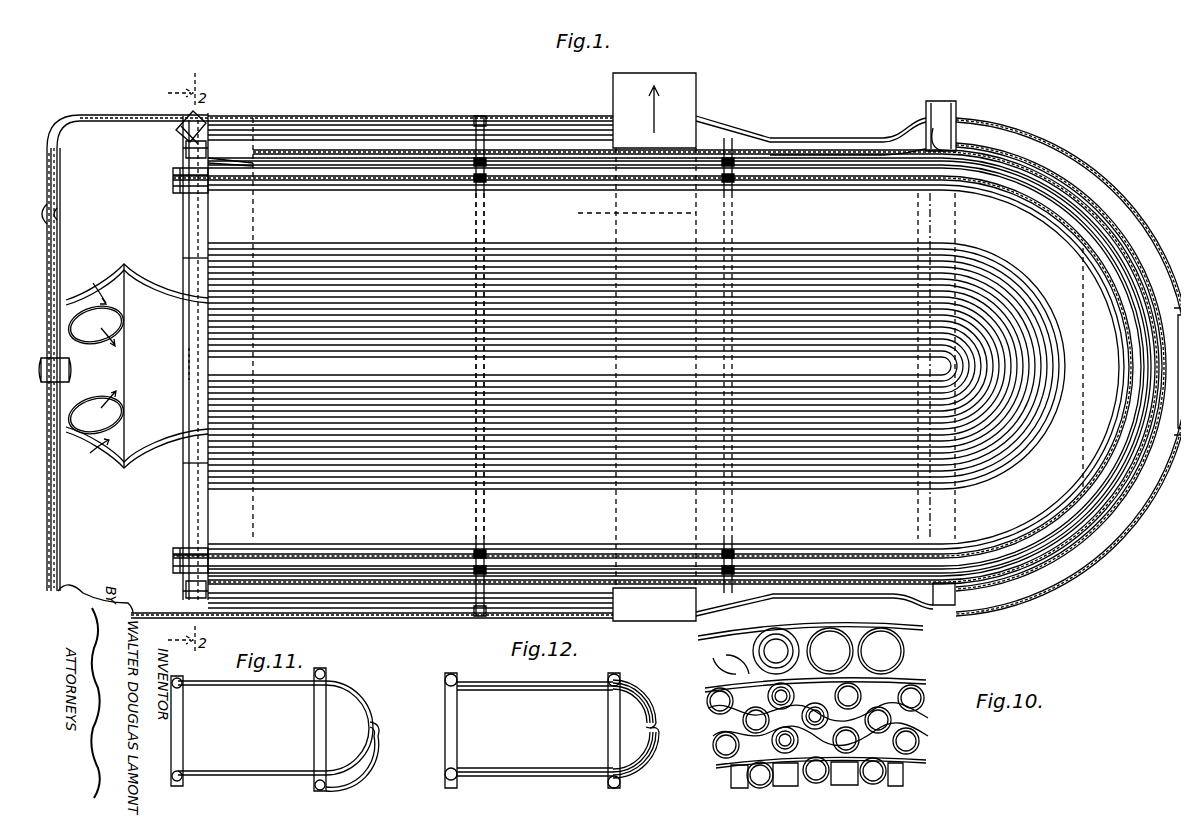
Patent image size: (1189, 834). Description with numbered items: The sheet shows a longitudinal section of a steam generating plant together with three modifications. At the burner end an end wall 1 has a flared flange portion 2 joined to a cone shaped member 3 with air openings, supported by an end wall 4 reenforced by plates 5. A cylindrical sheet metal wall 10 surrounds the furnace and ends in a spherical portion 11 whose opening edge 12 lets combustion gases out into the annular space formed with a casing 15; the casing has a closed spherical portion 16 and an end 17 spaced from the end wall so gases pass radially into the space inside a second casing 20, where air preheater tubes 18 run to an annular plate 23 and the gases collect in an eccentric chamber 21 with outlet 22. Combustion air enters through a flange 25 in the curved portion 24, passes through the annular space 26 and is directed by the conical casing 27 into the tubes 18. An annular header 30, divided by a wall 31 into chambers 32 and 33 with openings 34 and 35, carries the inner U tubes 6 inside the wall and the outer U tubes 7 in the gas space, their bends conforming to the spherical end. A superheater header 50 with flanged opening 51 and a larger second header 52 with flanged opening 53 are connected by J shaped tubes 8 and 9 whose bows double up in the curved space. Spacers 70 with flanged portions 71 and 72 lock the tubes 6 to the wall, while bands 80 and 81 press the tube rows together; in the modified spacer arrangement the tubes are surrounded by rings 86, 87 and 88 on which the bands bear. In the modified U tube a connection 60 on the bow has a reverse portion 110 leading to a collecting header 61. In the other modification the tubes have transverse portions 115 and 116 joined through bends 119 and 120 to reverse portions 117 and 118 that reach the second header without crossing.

In FIG. 1, the end wall 1 is at (200, 484).
In FIG. 1, the flared flange portion 2 is at (143, 435).
In FIG. 1, the cone shaped member 3 is at (80, 431).
In FIG. 1, the end wall 4 is at (50, 258).
In FIG. 1, the plates 5 is at (50, 213).
In FIG. 1, the U tubes 6 is at (522, 480).
In FIG. 10, the U tubes 6 is at (870, 776).
In FIG. 1, the U tubes 7 is at (548, 480).
In FIG. 10, the U tubes 7 is at (808, 722).
In FIG. 1, the superheater tube 8 is at (352, 150).
In FIG. 11, the superheater tube 8 is at (298, 672).
In FIG. 12, the superheater tube 8 is at (555, 680).
In FIG. 10, the superheater tube 8 is at (860, 720).
In FIG. 1, the superheater tube 9 is at (410, 485).
In FIG. 12, the superheater tube 9 is at (562, 676).
In FIG. 10, the superheater tube 9 is at (788, 686).
In FIG. 1, the sheet metal wall 10 is at (378, 485).
In FIG. 10, the sheet metal wall 10 is at (712, 758).
In FIG. 1, the spherical portion 11 is at (1000, 575).
In FIG. 1, the opening edge 12 is at (1075, 345).
In FIG. 1, the casing 15 is at (585, 482).
In FIG. 10, the casing 15 is at (715, 670).
In FIG. 1, the spherical portion of casing 16 is at (1095, 200).
In FIG. 1, the casing end 17 is at (250, 228).
In FIG. 1, the tubes 18 is at (312, 605).
In FIG. 1, the second casing 20 is at (405, 610).
In FIG. 10, the second casing 20 is at (790, 600).
In FIG. 1, the chamber 21 is at (662, 610).
In FIG. 1, the outlet 22 is at (690, 102).
In FIG. 1, the annular plate 23 is at (728, 117).
In FIG. 1, the curved portion of enclosing casing 24 is at (1138, 212).
In FIG. 1, the flange 25 is at (1177, 350).
In FIG. 1, the annular space 26 is at (825, 128).
In FIG. 1, the conical casing 27 is at (770, 125).
In FIG. 1, the header 30 is at (186, 516).
In FIG. 1, the wall 31 is at (185, 356).
In FIG. 1, the chamber 32 is at (173, 252).
In FIG. 1, the chamber 33 is at (186, 460).
In FIG. 1, the opening 34 is at (165, 172).
In FIG. 1, the opening 35 is at (165, 552).
In FIG. 1, the annular header 50 is at (178, 583).
In FIG. 11, the annular header 50 is at (168, 672).
In FIG. 12, the annular header 50 is at (443, 668).
In FIG. 1, the flanged opening 51 is at (195, 112).
In FIG. 1, the second header 52 is at (935, 600).
In FIG. 12, the second header 52 is at (606, 668).
In FIG. 1, the flanged opening 53 is at (935, 95).
In FIG. 11, the connection 60 is at (374, 721).
In FIG. 11, the header 61 is at (322, 782).
In FIG. 1, the spacers 70 is at (718, 533).
In FIG. 10, the spacers 70 is at (781, 770).
In FIG. 10, the flanged portion 71 is at (723, 776).
In FIG. 10, the flanged portion 72 is at (828, 768).
In FIG. 1, the band 80 is at (726, 556).
In FIG. 10, the band 80 is at (905, 725).
In FIG. 1, the band 81 is at (728, 560).
In FIG. 10, the band 81 is at (878, 700).
In FIG. 1, the ring 86 is at (478, 175).
In FIG. 10, the ring 86 is at (765, 740).
In FIG. 10, the ring 87 is at (756, 720).
In FIG. 1, the ring 88 is at (465, 590).
In FIG. 10, the ring 88 is at (760, 688).
In FIG. 11, the reverse portion 110 is at (360, 768).
In FIG. 12, the transverse portion 115 is at (610, 693).
In FIG. 12, the transverse portion 116 is at (620, 695).
In FIG. 12, the reverse portion 117 is at (640, 675).
In FIG. 12, the reverse portion 118 is at (622, 672).
In FIG. 12, the bend 119 is at (655, 720).
In FIG. 12, the bend 120 is at (650, 700).